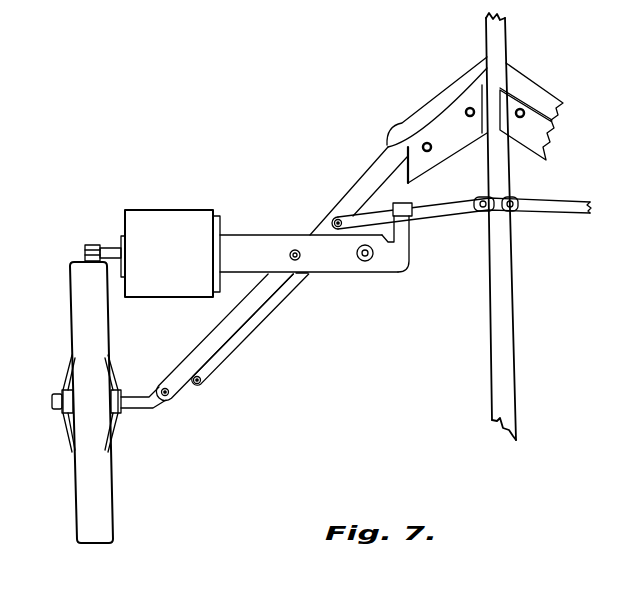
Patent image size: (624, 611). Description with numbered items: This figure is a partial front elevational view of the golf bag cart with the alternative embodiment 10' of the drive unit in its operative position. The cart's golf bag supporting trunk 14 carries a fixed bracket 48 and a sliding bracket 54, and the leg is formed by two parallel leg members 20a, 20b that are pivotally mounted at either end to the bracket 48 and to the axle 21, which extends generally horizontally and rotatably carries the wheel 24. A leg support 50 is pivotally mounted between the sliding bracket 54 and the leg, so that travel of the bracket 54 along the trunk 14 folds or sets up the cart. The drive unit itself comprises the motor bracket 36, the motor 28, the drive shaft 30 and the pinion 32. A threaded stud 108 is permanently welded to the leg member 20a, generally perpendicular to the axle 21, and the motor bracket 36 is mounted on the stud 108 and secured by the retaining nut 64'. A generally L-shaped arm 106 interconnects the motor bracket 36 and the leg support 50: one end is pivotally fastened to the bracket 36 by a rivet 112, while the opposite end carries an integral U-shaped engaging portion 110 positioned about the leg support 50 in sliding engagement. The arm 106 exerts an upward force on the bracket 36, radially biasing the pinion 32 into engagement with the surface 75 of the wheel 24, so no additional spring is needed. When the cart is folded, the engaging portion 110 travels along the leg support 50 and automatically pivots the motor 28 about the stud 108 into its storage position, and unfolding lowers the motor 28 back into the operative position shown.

The alternative embodiment of the drive unit 10' is at (218, 150).
The trunk 14 is at (496, 35).
The bracket 48 is at (450, 97).
The leg support 50 is at (455, 203).
The bracket 54 is at (484, 213).
The U-shaped engaging portion 110 is at (404, 216).
The arm 106 is at (399, 253).
The rivet 112 is at (365, 262).
The threaded stud 108 is at (300, 250).
The motor bracket 36 is at (250, 247).
The retaining nut 64' is at (297, 305).
The leg member 20a is at (192, 360).
The leg member 20b is at (242, 333).
The axle 21 is at (140, 400).
The wheel 24 is at (144, 411).
The surface of wheel 75 is at (116, 488).
The motor 28 is at (170, 257).
The drive shaft 30 is at (113, 250).
The pinion 32 is at (89, 247).